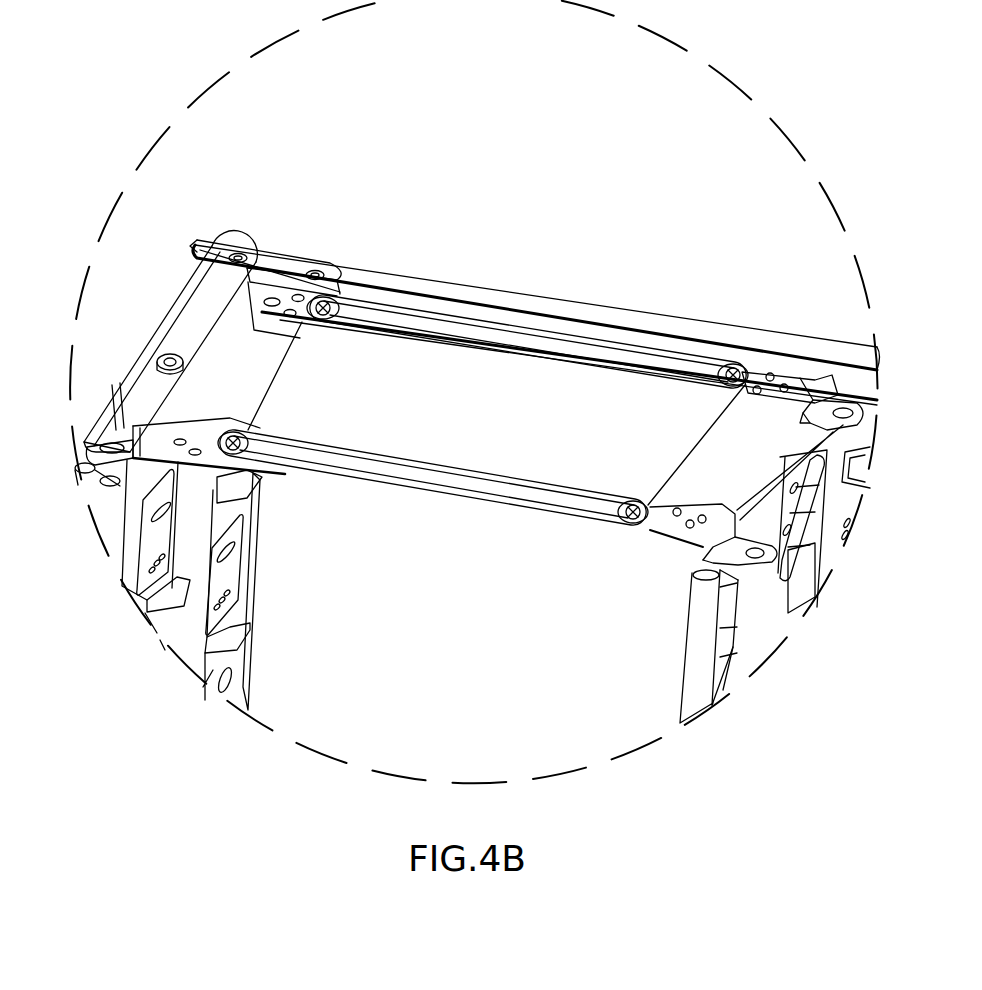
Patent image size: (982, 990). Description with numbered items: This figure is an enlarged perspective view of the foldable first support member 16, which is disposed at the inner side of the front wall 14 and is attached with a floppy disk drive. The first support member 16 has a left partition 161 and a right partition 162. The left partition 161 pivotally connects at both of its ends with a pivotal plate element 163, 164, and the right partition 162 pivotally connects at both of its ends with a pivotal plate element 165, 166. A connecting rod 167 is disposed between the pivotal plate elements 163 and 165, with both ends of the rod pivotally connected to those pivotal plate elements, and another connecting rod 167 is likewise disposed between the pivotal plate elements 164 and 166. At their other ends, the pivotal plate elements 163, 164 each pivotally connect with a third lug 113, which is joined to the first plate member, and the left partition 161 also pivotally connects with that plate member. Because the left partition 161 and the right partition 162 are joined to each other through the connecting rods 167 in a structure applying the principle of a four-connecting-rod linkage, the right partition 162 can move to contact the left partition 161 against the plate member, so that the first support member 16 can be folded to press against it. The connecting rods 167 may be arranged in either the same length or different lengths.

The front wall 14 is at (570, 308).
The first support member 16 is at (437, 387).
The third lug 113 is at (82, 442).
The left partition 161 is at (345, 300).
The right partition 162 is at (728, 460).
The pivotal plate element 163 is at (260, 300).
The pivotal plate element 164 is at (110, 395).
The pivotal plate element 165 is at (800, 383).
The pivotal plate element 166 is at (670, 535).
The connecting rod 167 is at (627, 357).